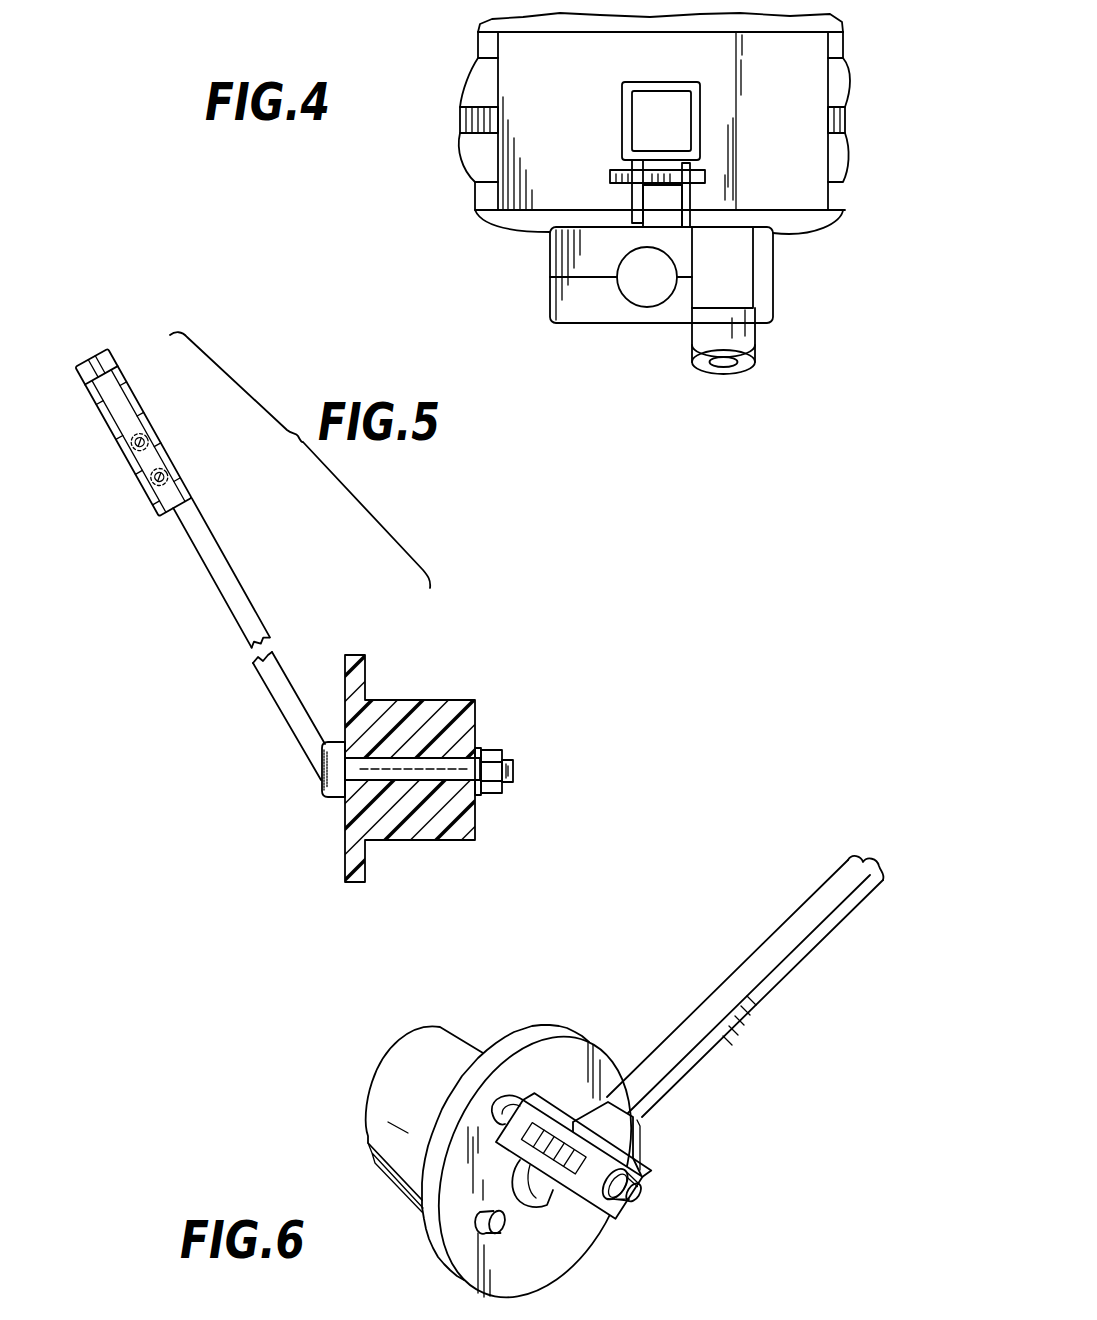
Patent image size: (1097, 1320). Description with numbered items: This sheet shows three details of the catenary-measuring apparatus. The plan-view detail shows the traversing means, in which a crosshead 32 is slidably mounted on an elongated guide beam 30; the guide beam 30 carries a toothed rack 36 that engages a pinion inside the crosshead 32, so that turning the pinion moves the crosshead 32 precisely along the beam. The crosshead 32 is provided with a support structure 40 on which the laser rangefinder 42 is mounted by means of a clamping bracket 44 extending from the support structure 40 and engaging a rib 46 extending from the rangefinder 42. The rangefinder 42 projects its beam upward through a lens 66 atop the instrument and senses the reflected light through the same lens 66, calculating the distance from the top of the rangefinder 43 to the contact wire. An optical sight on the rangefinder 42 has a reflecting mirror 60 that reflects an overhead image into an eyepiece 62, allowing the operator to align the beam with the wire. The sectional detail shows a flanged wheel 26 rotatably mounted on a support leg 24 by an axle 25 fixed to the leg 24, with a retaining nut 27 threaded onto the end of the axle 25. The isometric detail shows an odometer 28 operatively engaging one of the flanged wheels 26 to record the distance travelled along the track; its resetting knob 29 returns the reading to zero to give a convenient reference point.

In FIG. 5, the support leg 24 is at (188, 548).
In FIG. 6, the support leg 24 is at (762, 950).
In FIG. 5, the axle 25 is at (455, 767).
In FIG. 5, the flanged wheel 26 is at (345, 838).
In FIG. 6, the flanged wheel 26 is at (372, 1133).
In FIG. 5, the retaining nut 27 is at (492, 795).
In FIG. 6, the odometer 28 is at (617, 1212).
In FIG. 6, the resetting knob 29 is at (650, 1180).
In FIG. 4, the guide beam 30 is at (470, 152).
In FIG. 4, the crosshead 32 is at (812, 92).
In FIG. 4, the toothed rack 36 is at (460, 121).
In FIG. 4, the support structure 40 is at (702, 92).
In FIG. 4, the laser rangefinder 42 is at (583, 326).
In FIG. 4, the top of the rangefinder 43 is at (550, 293).
In FIG. 4, the clamping bracket 44 is at (690, 178).
In FIG. 4, the rib 46 is at (668, 205).
In FIG. 4, the reflecting mirror 60 is at (738, 290).
In FIG. 4, the eyepiece 62 is at (755, 362).
In FIG. 4, the lens 66 is at (650, 297).